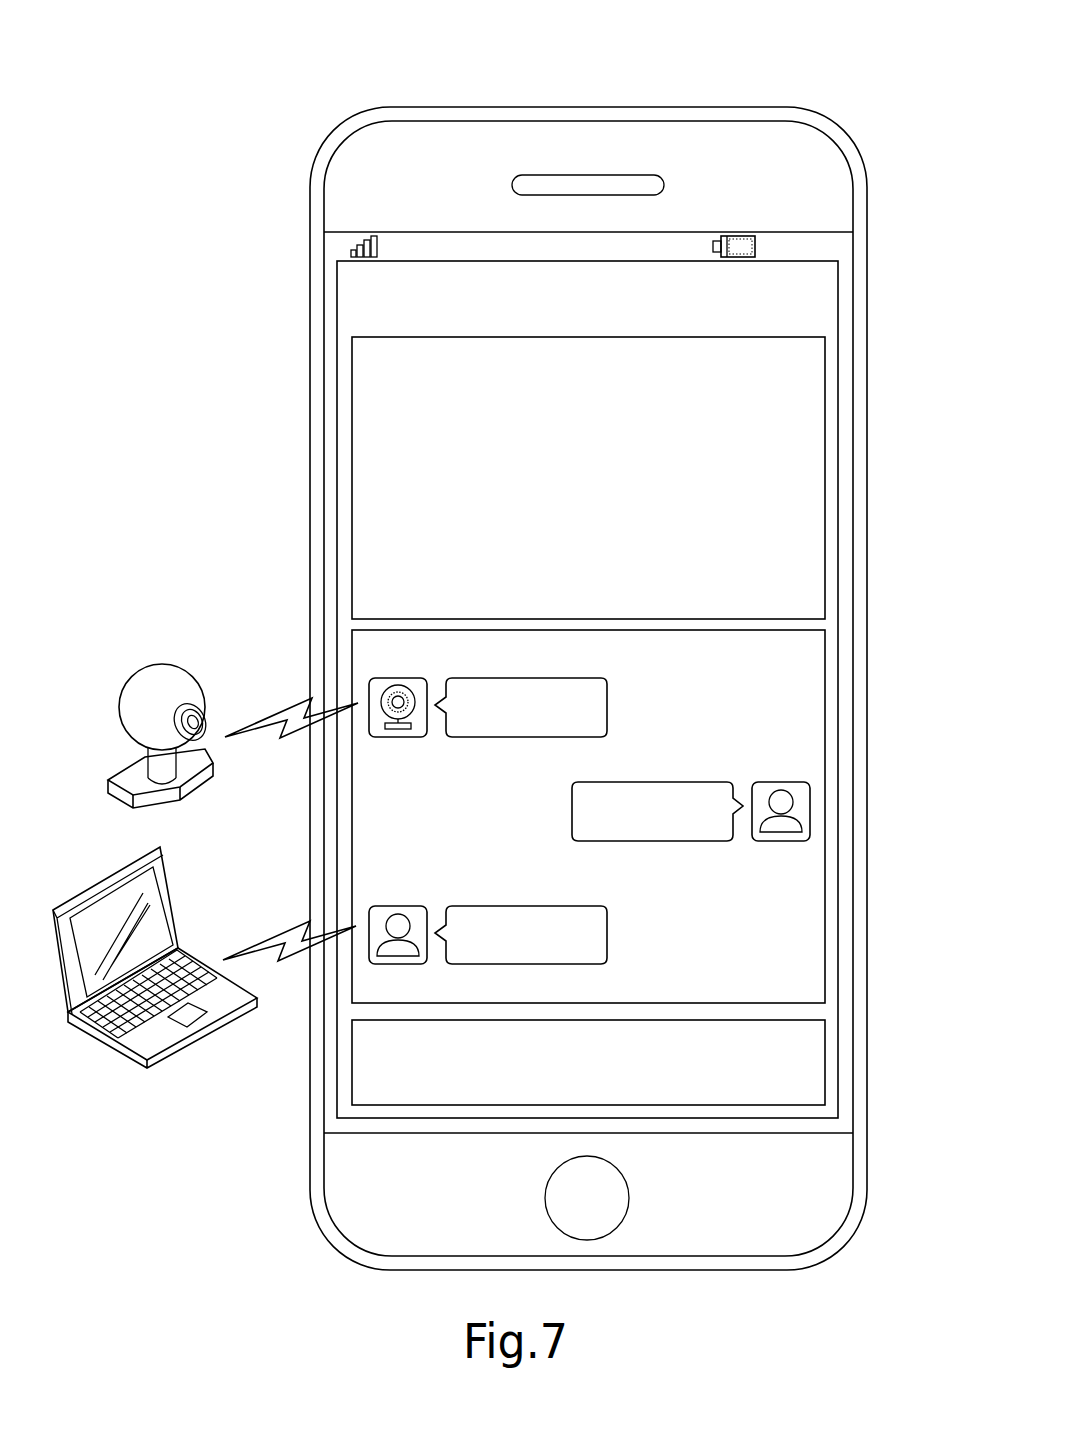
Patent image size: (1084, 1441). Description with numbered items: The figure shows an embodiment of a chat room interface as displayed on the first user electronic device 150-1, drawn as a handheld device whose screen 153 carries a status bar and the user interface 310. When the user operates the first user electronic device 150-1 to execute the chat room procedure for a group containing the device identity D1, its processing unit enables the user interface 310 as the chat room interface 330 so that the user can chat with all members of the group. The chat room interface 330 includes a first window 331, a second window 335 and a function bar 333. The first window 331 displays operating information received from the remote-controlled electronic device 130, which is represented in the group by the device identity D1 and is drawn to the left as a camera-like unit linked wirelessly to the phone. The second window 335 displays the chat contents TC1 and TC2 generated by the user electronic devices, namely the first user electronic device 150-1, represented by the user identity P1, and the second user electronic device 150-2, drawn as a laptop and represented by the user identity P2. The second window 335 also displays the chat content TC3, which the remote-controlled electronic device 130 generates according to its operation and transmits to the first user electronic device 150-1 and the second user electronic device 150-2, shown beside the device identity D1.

The first user electronic device 150-1 is at (296, 98).
The user interface 310 is at (452, 261).
The screen 153 is at (838, 250).
The chat room interface 330 is at (807, 317).
The first window 331 is at (807, 495).
The second window 335 is at (807, 686).
The function bar 333 is at (795, 1061).
The chat content TC1 is at (713, 841).
The chat content TC2 is at (482, 965).
The chat content TC3 is at (480, 678).
The user identity P1 is at (810, 807).
The user identity P2 is at (398, 906).
The device identity D1 is at (400, 740).
The remote-controlled electronic device 130 is at (155, 666).
The second user electronic device 150-2 is at (168, 1053).